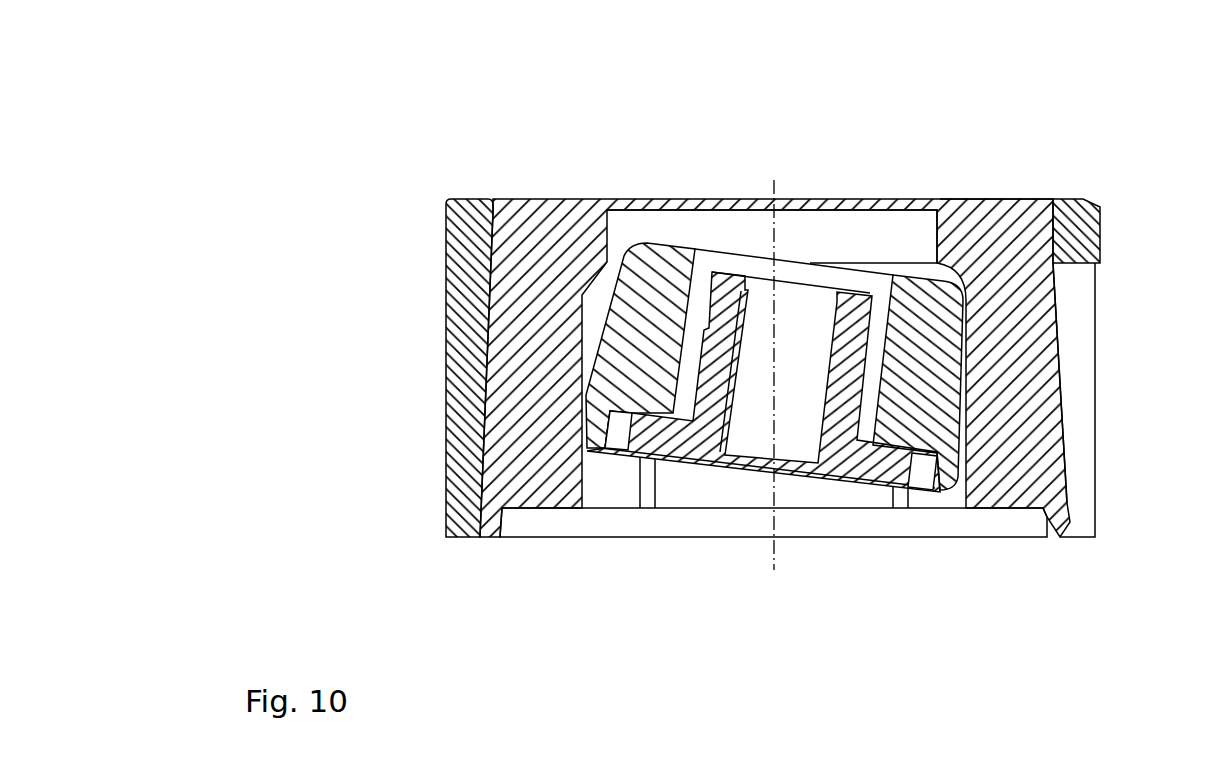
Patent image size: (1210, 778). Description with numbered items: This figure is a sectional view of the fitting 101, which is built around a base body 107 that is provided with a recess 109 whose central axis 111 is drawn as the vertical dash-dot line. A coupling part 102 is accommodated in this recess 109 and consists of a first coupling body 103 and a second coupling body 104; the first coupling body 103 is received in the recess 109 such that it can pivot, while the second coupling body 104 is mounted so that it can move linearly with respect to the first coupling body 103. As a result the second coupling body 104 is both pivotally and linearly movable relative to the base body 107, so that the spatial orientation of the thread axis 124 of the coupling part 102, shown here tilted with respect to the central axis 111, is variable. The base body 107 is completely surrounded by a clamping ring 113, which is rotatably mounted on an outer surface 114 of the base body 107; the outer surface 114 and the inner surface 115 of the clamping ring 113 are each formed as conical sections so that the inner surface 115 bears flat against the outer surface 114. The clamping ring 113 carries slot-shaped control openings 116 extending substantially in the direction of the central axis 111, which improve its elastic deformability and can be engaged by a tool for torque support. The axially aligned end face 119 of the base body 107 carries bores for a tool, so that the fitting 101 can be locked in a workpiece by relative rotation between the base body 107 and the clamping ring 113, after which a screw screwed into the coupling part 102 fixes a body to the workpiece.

The fitting 101 is at (227, 113).
The coupling part 102 is at (726, 251).
The first coupling body 103 is at (648, 266).
The second coupling body 104 is at (856, 300).
The base body 107 is at (555, 197).
The recess 109 is at (829, 221).
The central axis 111 is at (770, 180).
The clamping ring 113 is at (1081, 200).
The outer surface 114 is at (1083, 421).
The inner surface 115 is at (493, 260).
The control opening 116 is at (1080, 310).
The end face 119 is at (988, 198).
The thread axis 124 is at (765, 490).